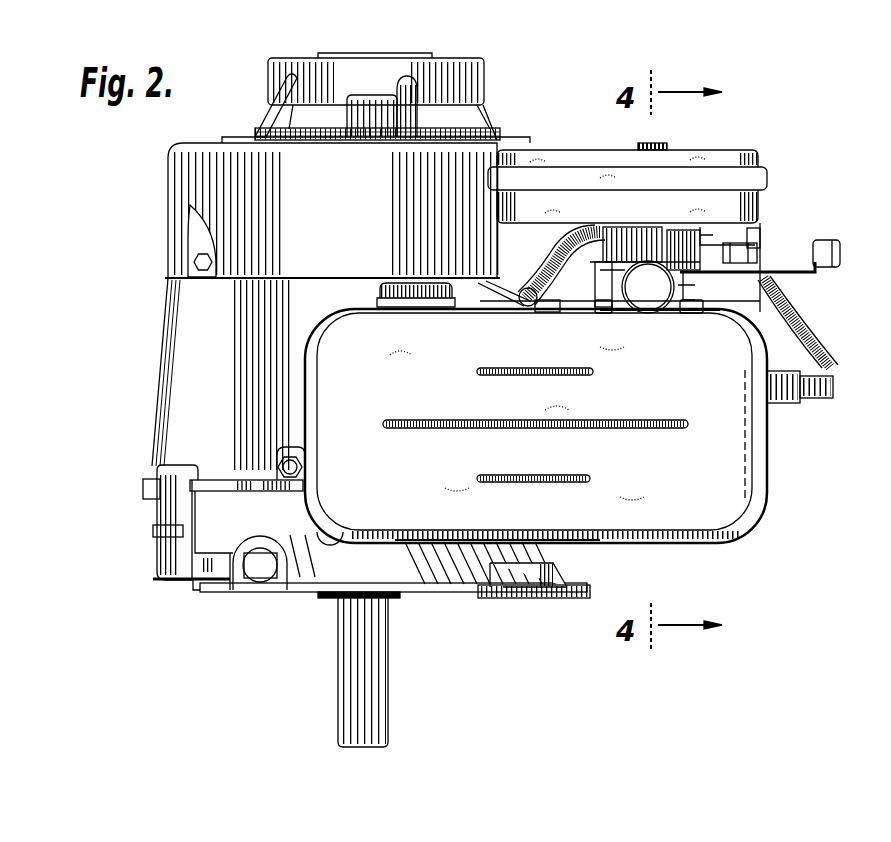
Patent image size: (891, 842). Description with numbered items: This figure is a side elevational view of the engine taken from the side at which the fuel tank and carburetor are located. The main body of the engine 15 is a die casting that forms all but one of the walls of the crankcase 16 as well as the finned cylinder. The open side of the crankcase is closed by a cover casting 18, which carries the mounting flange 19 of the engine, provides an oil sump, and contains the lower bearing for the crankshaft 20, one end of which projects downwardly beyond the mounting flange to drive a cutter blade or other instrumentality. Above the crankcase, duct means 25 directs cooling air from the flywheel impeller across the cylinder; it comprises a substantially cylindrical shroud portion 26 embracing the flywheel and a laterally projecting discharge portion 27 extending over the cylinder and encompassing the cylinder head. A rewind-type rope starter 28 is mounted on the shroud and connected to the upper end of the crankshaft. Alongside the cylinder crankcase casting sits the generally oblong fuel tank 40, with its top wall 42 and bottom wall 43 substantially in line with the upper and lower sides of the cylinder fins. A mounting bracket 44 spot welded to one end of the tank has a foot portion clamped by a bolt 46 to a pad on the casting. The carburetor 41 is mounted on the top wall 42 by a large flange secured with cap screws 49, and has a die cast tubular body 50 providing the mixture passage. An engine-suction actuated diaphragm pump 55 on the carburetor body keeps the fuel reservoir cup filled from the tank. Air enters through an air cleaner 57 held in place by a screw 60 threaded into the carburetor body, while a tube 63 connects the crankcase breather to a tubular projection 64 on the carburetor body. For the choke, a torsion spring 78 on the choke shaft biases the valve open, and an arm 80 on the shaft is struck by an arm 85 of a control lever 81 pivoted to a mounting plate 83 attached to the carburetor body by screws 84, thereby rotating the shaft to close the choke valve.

The main body of the engine 15 is at (150, 306).
The crankcase 16 is at (170, 384).
The cover casting 18 is at (420, 572).
The mounting flange 19 is at (486, 593).
The crankshaft 20 is at (345, 660).
The duct means 25 is at (644, 162).
The shroud portion 26 is at (180, 178).
The discharge portion 27 is at (760, 236).
The rewind-type rope starter 28 is at (512, 70).
The fuel tank 40 is at (775, 464).
The carburetor 41 is at (684, 338).
The top wall 42 is at (545, 308).
The bottom wall 43 is at (668, 538).
The mounting bracket 44 is at (302, 452).
The bolt 46 is at (300, 466).
The cap screws 49 is at (605, 312).
The tubular body 50 is at (642, 308).
The diaphragm pump 55 is at (626, 287).
The air cleaner 57 is at (760, 152).
The screw 60 is at (660, 146).
The tube 63 is at (528, 306).
The tubular projection 64 is at (638, 208).
The torsion spring 78 is at (695, 285).
The arm 80 is at (705, 235).
The control lever 81 is at (840, 230).
The mounting plate 83 is at (760, 276).
The screws 84 is at (765, 305).
The arm 85 is at (745, 254).